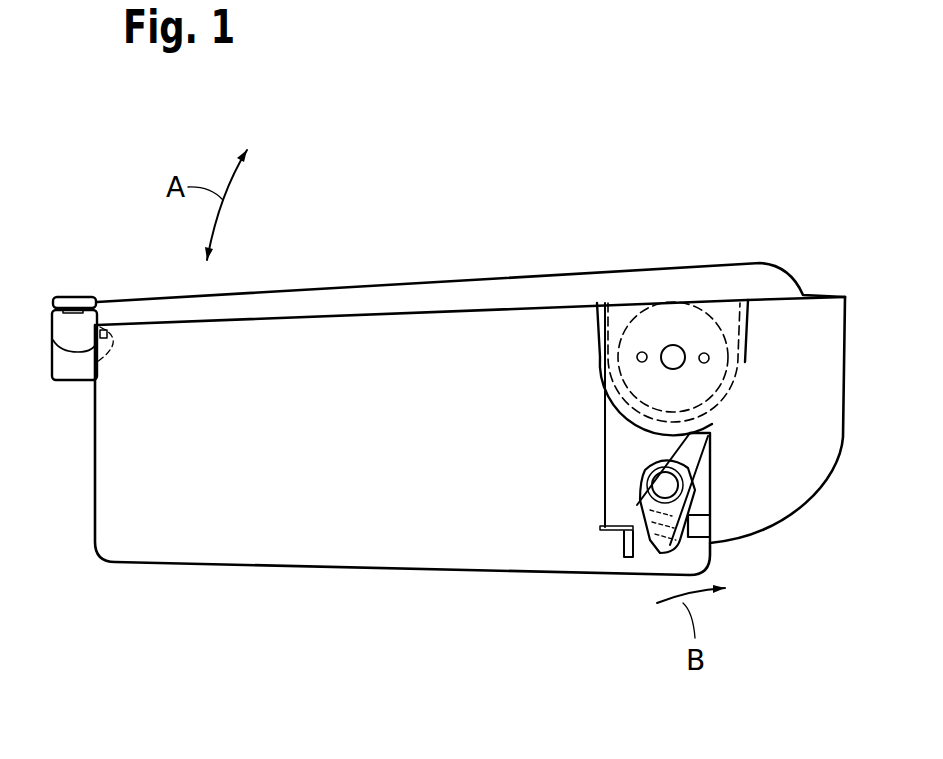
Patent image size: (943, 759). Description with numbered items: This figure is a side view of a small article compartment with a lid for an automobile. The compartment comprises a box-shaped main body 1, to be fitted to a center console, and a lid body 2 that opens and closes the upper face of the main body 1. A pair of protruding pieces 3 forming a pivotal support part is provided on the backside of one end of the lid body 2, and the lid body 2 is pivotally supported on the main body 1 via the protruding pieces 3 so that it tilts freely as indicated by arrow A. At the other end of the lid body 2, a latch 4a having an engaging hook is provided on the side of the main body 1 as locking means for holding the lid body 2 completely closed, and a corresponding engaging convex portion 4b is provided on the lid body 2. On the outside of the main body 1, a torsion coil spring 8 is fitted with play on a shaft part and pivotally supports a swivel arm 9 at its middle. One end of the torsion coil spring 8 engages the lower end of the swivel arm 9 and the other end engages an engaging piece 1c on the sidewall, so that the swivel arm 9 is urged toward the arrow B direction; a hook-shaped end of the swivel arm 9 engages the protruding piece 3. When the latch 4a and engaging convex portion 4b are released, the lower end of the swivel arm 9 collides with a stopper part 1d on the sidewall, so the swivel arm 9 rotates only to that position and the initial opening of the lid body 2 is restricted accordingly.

The main body 1 is at (347, 555).
The engaging piece 1c is at (617, 537).
The stopper part 1d is at (710, 502).
The lid body 2 is at (368, 285).
The protruding piece 3 is at (742, 362).
The latch 4a is at (100, 327).
The engaging convex portion 4b is at (53, 337).
The torsion coil spring 8 is at (640, 470).
The swivel arm 9 is at (703, 460).